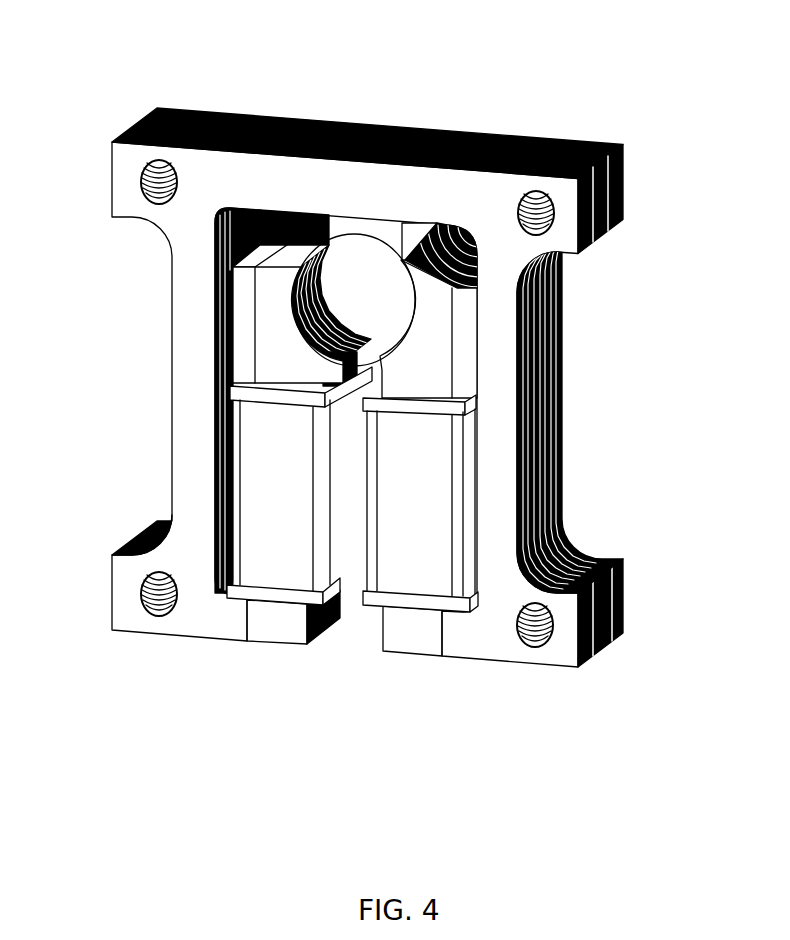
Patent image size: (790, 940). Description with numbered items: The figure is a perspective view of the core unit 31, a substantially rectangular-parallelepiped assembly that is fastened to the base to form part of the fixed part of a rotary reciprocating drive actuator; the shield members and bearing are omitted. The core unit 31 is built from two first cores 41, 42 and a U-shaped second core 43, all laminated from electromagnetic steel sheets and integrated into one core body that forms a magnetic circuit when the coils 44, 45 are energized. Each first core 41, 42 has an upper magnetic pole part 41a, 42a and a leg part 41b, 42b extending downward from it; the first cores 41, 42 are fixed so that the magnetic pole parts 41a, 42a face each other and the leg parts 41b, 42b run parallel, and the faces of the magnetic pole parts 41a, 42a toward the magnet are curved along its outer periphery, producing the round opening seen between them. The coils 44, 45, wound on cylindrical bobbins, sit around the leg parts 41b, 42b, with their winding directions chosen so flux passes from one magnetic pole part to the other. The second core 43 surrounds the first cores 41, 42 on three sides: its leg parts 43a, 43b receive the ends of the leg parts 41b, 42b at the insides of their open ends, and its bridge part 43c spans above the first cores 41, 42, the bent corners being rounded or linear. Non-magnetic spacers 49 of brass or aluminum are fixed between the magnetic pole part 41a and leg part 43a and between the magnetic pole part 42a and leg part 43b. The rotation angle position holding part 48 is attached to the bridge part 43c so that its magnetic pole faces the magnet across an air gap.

The core unit 31 is at (642, 93).
The first core 41 is at (290, 255).
The magnetic pole part 41a is at (275, 305).
The leg part 41b is at (285, 630).
The first core 42 is at (437, 262).
The magnetic pole part 42a is at (430, 310).
The leg part 42b is at (415, 632).
The second core 43 is at (226, 100).
The leg part 43a is at (190, 507).
The leg part 43b is at (550, 510).
The bridge part 43c is at (543, 152).
The coil 44 is at (255, 455).
The coil 45 is at (430, 462).
The rotation angle position holding part 48 is at (352, 225).
The spacer 49 is at (243, 340).